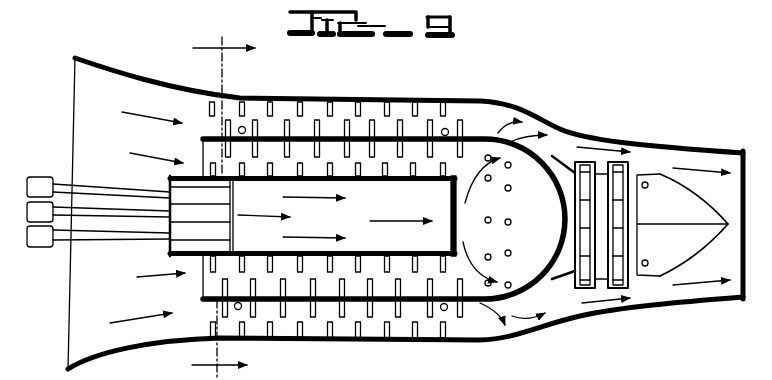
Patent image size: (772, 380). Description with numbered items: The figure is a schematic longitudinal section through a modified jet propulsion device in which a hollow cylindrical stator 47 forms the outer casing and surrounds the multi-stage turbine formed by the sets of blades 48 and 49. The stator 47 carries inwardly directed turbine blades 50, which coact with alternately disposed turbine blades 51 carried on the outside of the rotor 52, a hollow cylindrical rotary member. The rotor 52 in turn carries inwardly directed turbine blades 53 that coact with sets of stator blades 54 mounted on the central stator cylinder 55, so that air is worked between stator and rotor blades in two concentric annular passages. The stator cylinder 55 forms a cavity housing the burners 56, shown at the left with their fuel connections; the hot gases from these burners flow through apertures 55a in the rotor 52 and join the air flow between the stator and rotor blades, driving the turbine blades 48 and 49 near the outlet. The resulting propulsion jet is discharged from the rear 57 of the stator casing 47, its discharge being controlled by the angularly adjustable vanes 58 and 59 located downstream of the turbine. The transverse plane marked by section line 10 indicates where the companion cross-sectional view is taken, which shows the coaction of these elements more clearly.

The section line 10— 10 is at (202, 196).
The hollow cylindrical stator 47 is at (402, 100).
The turbine blades 48 is at (588, 162).
The turbine blades 49 is at (630, 166).
The inwardly directed turbine blades 50 is at (352, 113).
The turbine blades 51 is at (256, 125).
The rotor 52 is at (202, 136).
The inwardly directed turbine blades 53 is at (395, 152).
The stator blades 54 is at (332, 267).
The stator cylinder 55 is at (170, 253).
The apertures 55a is at (510, 142).
The burners 56 is at (187, 215).
The rear 57 is at (723, 292).
The angularly adjustable vane 58 is at (672, 200).
The angularly adjustable vane 59 is at (672, 258).